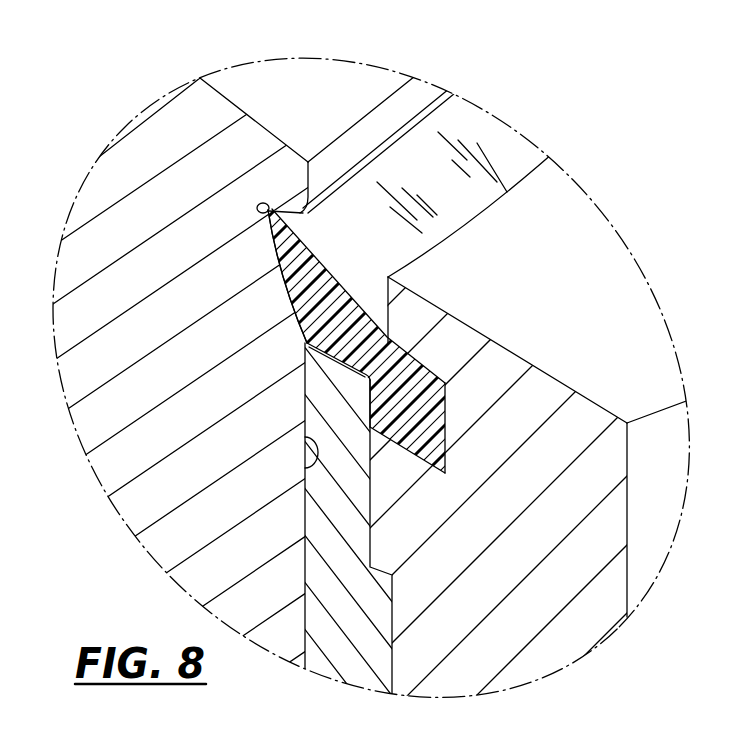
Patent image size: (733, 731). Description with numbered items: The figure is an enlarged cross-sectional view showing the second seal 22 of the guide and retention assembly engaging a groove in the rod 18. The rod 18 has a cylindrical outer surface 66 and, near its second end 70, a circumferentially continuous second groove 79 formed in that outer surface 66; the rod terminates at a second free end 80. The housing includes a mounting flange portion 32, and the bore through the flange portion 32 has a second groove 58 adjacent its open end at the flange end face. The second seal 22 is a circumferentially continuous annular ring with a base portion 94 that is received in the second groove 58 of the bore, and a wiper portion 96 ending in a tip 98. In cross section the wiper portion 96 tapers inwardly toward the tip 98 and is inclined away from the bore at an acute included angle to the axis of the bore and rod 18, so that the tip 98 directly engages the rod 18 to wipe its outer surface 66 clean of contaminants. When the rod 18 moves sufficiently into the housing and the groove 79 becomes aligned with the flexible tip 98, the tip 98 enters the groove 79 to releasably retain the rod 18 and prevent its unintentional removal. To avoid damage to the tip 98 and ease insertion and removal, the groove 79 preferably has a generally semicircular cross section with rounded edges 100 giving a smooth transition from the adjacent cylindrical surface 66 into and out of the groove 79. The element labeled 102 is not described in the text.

The rod 18 is at (104, 426).
The second wiper seal 22 is at (504, 146).
The mounting flange portion 32 is at (588, 425).
The second groove 58 is at (447, 407).
The outer surface 66 is at (306, 461).
The second end 70 is at (118, 245).
The second groove 79 is at (258, 222).
The second free end 80 is at (332, 98).
The base portion 94 is at (415, 436).
The wiper portion 96 is at (318, 272).
The tip 98 is at (262, 210).
The rounded edges 100 is at (272, 210).
The latch arm side surface 102 is at (303, 328).